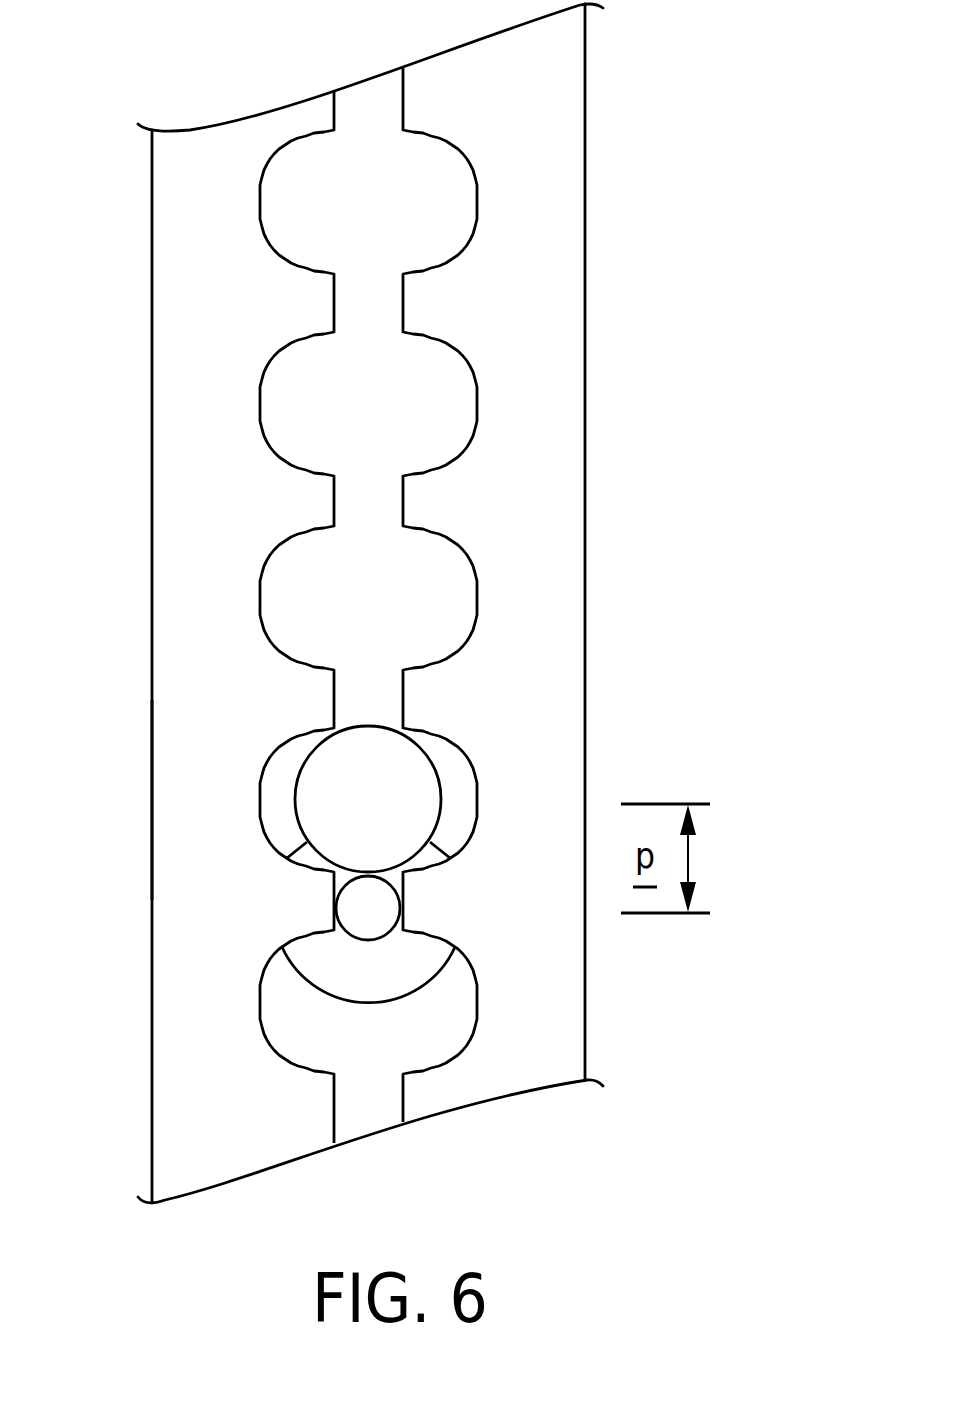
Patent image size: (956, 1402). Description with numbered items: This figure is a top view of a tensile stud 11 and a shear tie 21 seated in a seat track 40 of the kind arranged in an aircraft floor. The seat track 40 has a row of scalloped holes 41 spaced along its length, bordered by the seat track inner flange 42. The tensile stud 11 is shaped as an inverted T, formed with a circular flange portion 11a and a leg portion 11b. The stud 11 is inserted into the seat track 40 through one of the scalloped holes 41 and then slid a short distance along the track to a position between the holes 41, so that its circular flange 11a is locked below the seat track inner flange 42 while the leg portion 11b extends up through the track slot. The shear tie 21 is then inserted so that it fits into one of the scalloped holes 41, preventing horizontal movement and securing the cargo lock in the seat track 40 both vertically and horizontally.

The seat track 40 is at (673, 272).
The scalloped holes 41 is at (468, 585).
The seat track inner flange 42 is at (173, 792).
The shear tie 21 is at (420, 792).
The tensile stud 11 is at (266, 975).
The flange portion 11a is at (367, 1003).
The leg portion 11b is at (348, 946).